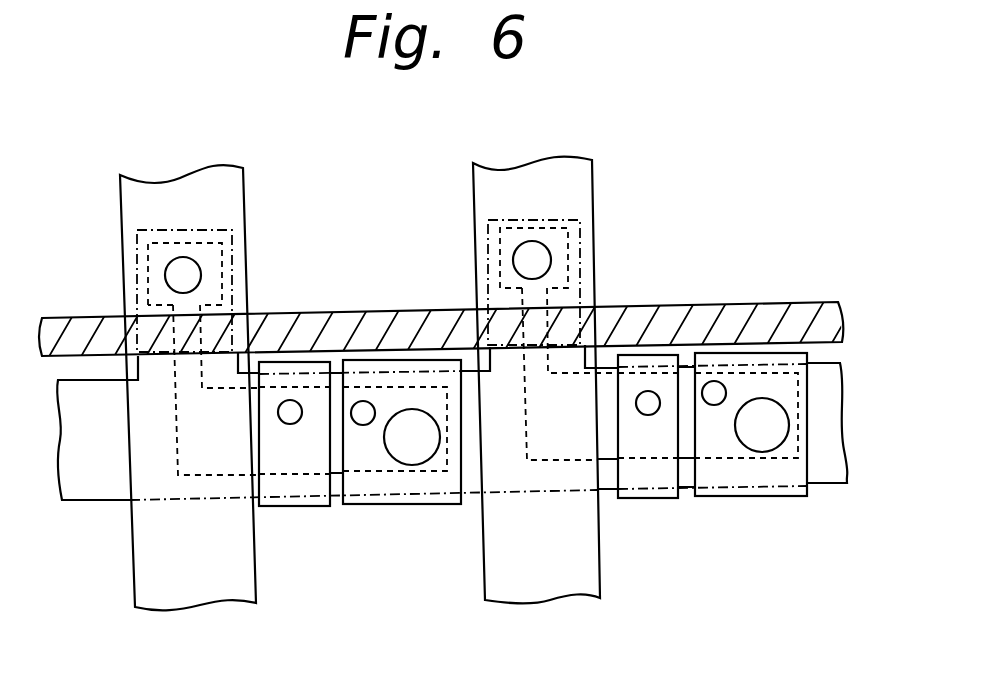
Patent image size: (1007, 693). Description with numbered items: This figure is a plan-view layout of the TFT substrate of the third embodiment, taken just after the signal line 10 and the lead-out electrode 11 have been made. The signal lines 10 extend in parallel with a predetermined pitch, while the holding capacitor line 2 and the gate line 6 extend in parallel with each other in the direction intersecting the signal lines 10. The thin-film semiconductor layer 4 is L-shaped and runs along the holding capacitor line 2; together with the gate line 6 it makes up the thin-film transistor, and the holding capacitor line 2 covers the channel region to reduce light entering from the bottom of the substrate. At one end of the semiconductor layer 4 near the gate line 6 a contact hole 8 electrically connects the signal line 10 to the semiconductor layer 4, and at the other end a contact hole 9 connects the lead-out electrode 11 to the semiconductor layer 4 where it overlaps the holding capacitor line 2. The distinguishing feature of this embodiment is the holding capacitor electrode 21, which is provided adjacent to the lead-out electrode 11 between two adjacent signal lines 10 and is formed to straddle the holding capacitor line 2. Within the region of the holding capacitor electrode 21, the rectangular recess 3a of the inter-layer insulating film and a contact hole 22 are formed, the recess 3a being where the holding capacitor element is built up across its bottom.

The holding capacitor line 2 is at (97, 472).
The recess 3a is at (413, 453).
The thin-film semiconductor layer 4 is at (338, 460).
The gate line 6 is at (75, 340).
The contact hole 8 is at (517, 262).
The contact hole 9 is at (168, 278).
The signal line 10 is at (202, 573).
The lead-out electrode 11 is at (292, 502).
The holding capacitor electrode 21 is at (386, 500).
The contact hole 22 is at (363, 405).